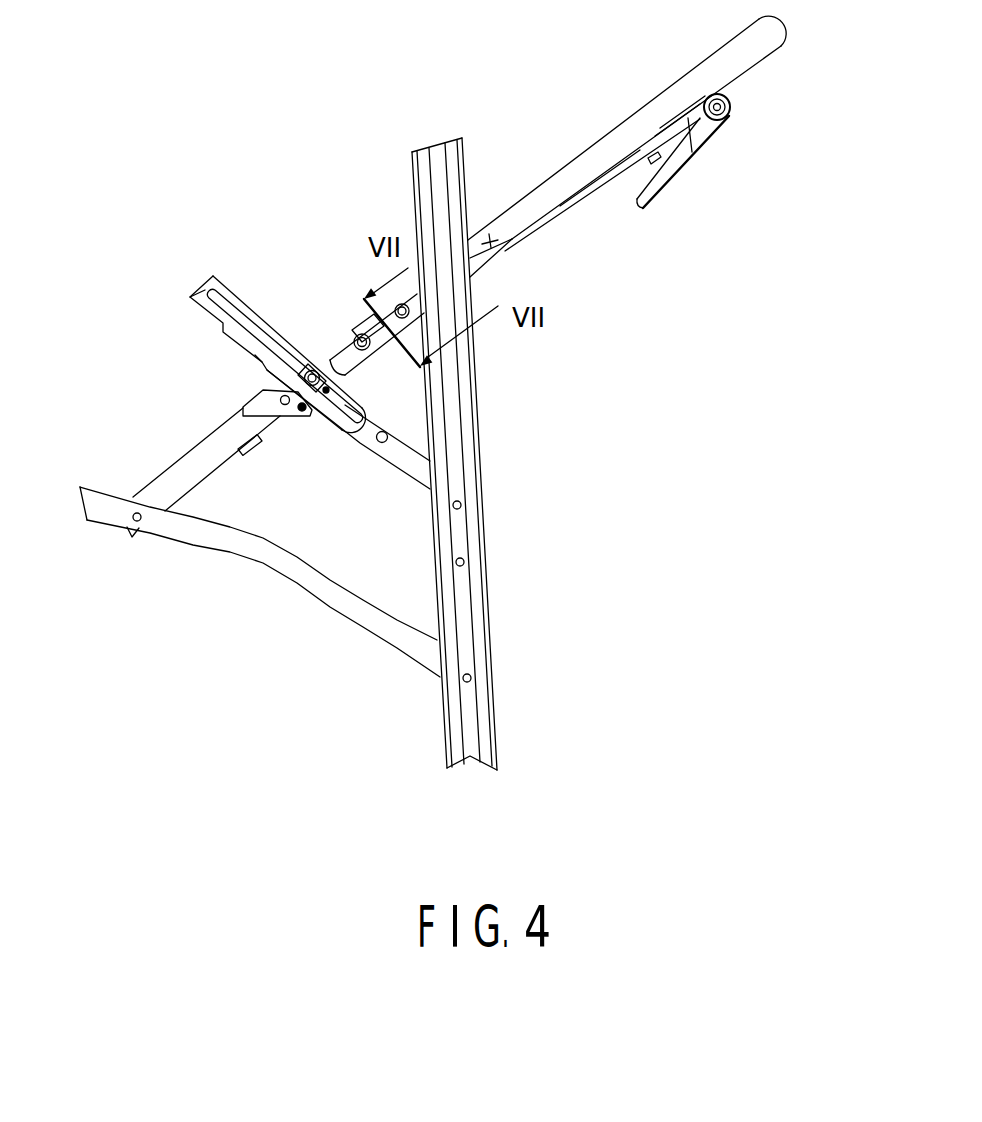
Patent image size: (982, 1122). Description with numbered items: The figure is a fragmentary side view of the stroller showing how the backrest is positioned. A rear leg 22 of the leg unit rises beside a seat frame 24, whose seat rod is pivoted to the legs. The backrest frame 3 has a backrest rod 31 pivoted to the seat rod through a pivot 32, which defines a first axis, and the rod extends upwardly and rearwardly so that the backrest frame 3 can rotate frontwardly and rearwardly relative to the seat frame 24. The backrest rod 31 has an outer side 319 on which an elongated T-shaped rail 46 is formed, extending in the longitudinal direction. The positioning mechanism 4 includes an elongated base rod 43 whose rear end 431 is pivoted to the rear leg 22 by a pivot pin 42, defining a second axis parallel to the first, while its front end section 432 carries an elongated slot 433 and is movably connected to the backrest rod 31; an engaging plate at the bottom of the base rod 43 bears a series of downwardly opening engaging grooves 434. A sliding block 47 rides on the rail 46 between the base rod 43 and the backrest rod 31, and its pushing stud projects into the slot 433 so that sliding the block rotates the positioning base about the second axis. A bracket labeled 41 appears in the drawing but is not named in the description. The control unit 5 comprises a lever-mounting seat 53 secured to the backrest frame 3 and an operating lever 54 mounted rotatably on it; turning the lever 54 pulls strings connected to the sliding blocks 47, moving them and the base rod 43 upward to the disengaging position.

The rear legs 22 is at (485, 735).
The seat frame 24 is at (193, 538).
The backrest frame 3 is at (770, 60).
The outer side 319 is at (560, 178).
The backrest rods 31 is at (180, 460).
The pivot 32 is at (130, 527).
The positioning mechanism 4 is at (319, 358).
The mounting bracket 41 is at (297, 408).
The pivot pin 42 is at (462, 505).
The base rods 43 is at (225, 296).
The rear end 431 is at (403, 470).
The front end section 432 is at (195, 295).
The elongated slot 433 is at (228, 308).
The engaging grooves 434 is at (262, 352).
The T-shaped rails 46 is at (312, 360).
The sliding blocks 47 is at (306, 410).
The control unit 5 is at (677, 176).
The lever-mounting seat 53 is at (677, 120).
The operating lever 54 is at (647, 207).